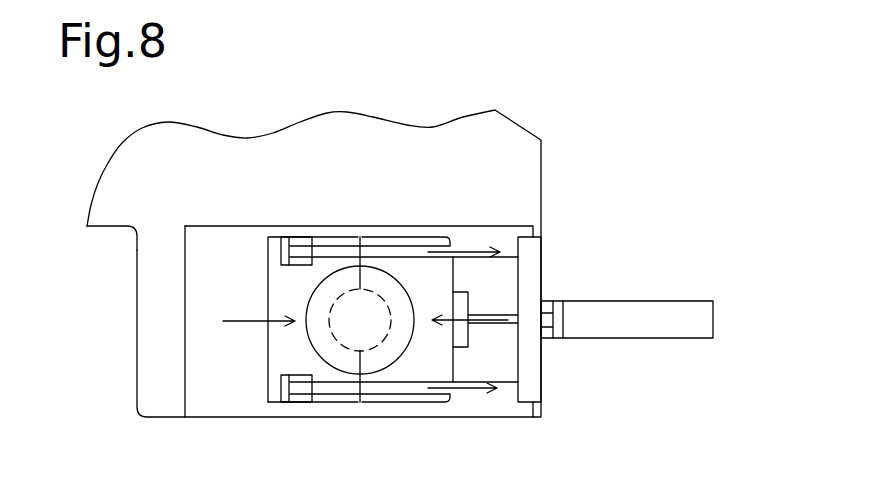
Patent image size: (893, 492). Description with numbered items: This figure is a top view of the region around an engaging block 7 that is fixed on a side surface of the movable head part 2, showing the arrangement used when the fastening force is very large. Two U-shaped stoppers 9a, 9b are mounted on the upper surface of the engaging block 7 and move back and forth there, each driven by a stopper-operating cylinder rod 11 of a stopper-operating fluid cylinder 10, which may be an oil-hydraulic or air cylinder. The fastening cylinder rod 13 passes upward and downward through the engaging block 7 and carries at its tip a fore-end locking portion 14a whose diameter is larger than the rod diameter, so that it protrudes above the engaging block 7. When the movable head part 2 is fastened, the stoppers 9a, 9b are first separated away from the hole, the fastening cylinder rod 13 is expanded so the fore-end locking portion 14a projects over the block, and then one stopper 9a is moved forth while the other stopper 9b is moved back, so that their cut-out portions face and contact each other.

The movable head part 2 is at (523, 170).
The engaging block 7 is at (213, 397).
The stopper 9a is at (417, 400).
The stopper 9b is at (273, 392).
The stopper-operating fluid cylinder 10 is at (643, 328).
The stopper-operating cylinder rod 11 is at (505, 250).
The fastening cylinder rod 13 is at (370, 343).
The fore-end locking portion 14a is at (343, 360).